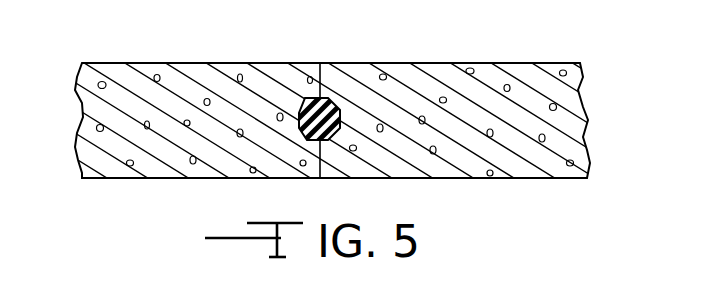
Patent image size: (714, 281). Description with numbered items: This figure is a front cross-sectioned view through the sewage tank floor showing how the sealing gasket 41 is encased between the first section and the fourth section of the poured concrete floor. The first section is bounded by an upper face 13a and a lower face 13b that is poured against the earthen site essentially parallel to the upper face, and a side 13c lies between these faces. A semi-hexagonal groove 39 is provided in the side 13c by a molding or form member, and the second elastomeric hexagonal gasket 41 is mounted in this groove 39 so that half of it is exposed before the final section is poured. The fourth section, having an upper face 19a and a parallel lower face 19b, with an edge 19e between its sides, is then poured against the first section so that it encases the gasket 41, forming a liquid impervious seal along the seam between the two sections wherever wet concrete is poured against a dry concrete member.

The upper face 13a is at (538, 54).
The lower face 13b is at (515, 178).
The side 13c is at (322, 77).
The upper face 19a is at (192, 58).
The lower face 19b is at (133, 178).
The edge 19e is at (320, 150).
The semi-hexagonal groove 39 is at (341, 106).
The second elastomeric hexagonal gasket 41 is at (300, 108).